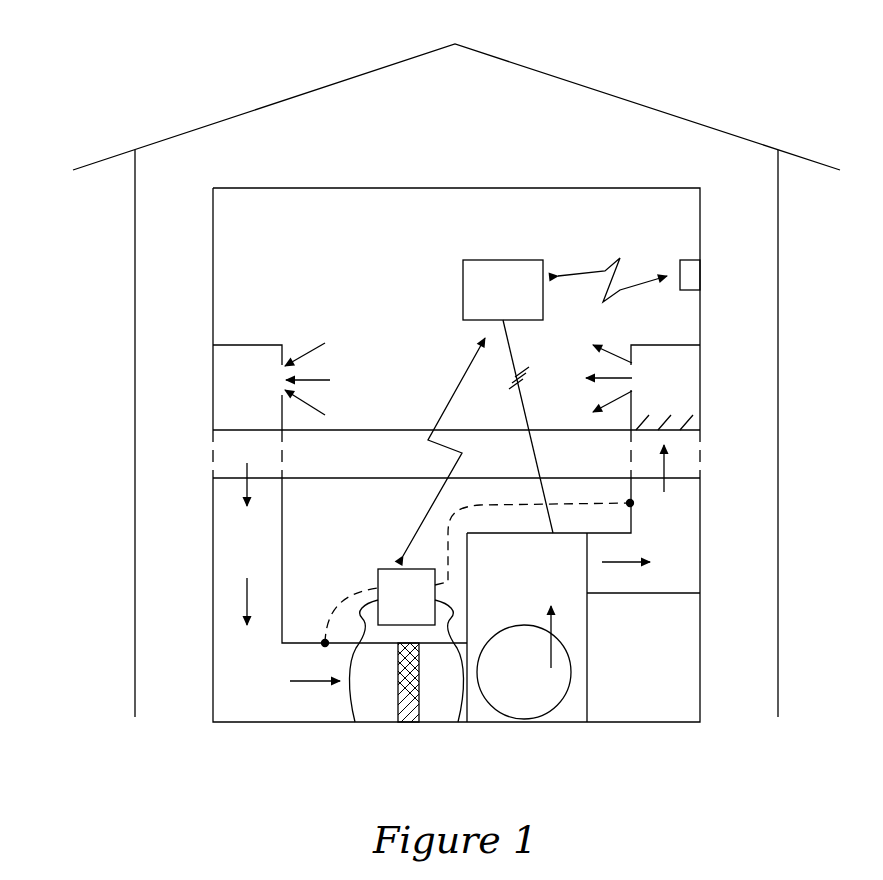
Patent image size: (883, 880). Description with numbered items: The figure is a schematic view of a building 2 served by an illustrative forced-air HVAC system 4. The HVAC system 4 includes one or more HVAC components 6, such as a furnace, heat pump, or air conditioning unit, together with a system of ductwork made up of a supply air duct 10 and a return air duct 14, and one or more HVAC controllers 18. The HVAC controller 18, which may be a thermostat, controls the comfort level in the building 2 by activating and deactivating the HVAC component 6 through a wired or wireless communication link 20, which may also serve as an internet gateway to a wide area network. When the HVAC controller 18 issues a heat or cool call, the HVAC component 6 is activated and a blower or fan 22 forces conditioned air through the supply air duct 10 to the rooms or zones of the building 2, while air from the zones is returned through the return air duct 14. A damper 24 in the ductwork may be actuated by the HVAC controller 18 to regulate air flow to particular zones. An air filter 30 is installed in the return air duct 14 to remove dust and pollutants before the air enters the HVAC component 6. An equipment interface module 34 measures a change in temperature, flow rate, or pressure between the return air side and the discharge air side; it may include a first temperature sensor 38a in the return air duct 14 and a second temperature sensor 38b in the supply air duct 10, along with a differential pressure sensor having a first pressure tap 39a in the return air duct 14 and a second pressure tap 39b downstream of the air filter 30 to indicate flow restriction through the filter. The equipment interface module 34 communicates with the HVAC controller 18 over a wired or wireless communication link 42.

The building 2 is at (647, 105).
The HVAC system 4 is at (669, 690).
The HVAC component 6 is at (589, 659).
The supply air duct 10 is at (669, 550).
The return air duct 14 is at (240, 551).
The HVAC controller 18 is at (503, 260).
The communication link 20 is at (690, 277).
The blower or fan 22 is at (557, 703).
The damper 24 is at (699, 427).
The air filter 30 is at (408, 723).
The equipment interface module 34 is at (388, 568).
The first temperature sensor 38a is at (324, 644).
The second temperature sensor 38b is at (632, 503).
The first pressure tap 39a is at (355, 722).
The second pressure tap 39b is at (458, 722).
The communication link 42 is at (460, 382).